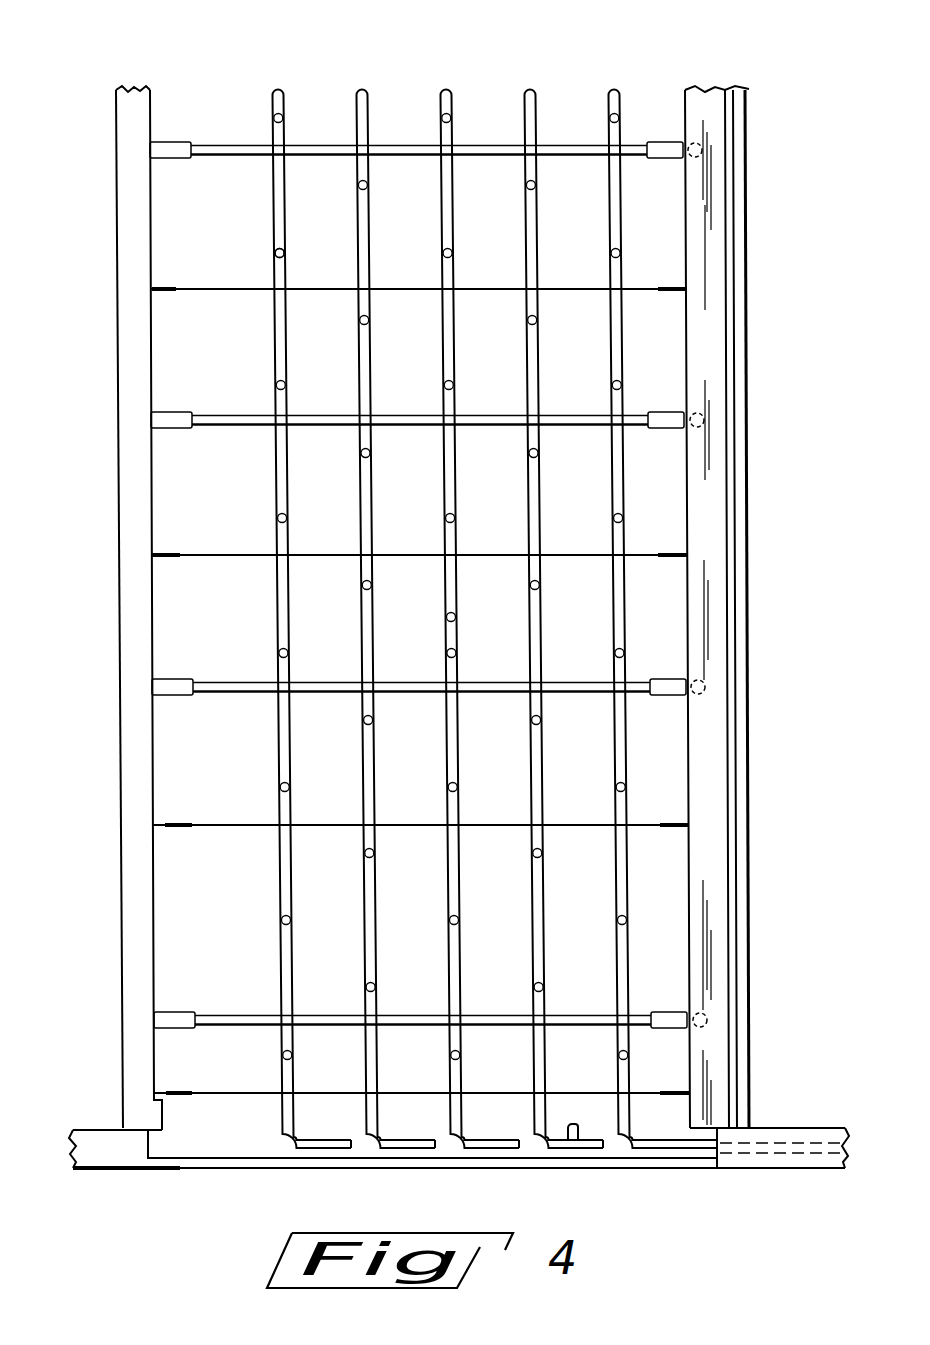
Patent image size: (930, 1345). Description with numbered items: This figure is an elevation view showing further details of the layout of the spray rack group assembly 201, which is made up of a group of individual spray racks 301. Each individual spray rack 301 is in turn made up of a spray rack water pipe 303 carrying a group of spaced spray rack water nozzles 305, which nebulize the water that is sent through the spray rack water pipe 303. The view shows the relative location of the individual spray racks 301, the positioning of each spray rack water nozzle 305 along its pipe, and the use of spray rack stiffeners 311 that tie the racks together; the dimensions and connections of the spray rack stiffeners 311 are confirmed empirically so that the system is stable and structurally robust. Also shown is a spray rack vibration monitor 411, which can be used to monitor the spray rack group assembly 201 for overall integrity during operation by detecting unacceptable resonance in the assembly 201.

The spray rack group assembly 201 is at (199, 74).
The individual spray rack 301 is at (267, 1145).
The spray rack water pipe 303 is at (285, 128).
The spray rack water nozzle 305 is at (275, 253).
The spray rack stiffener 311 is at (652, 288).
The spray rack vibration monitor 411 is at (456, 617).